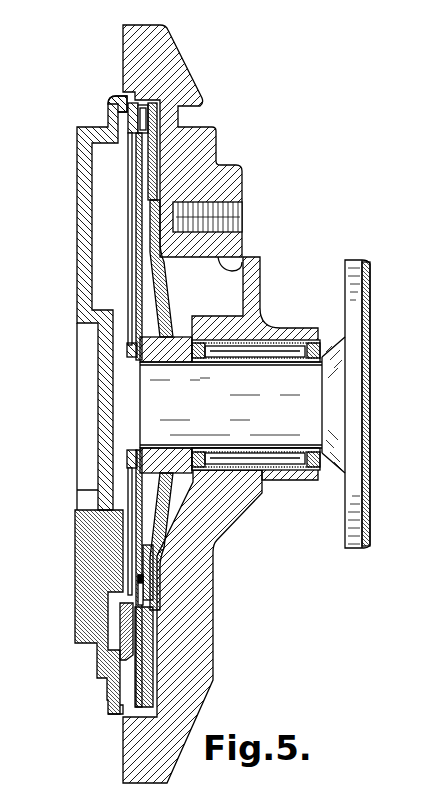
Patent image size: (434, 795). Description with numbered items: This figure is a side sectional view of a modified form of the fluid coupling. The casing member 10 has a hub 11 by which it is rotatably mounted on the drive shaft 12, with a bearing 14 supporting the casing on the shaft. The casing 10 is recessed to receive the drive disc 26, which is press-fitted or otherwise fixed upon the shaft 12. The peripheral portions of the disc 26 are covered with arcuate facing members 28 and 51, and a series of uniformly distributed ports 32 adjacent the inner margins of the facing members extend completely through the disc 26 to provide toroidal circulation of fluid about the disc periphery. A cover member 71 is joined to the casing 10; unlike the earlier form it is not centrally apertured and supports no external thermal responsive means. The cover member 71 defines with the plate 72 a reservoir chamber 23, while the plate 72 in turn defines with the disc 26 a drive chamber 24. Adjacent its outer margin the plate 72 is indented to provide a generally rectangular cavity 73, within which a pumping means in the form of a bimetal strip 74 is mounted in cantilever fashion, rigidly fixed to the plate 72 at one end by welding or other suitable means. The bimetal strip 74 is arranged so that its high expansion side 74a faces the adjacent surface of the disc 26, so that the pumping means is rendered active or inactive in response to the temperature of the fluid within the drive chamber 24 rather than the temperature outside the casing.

The casing member 10 is at (243, 255).
The hub 11 is at (277, 333).
The drive shaft 12 is at (236, 398).
The bearing 14 is at (252, 352).
The reservoir chamber 23 is at (113, 607).
The drive chamber 24 is at (120, 603).
The drive disc 26 is at (146, 567).
The arcuate facing member 28 is at (140, 181).
The ports 32 is at (140, 597).
The arcuate facing member 51 is at (156, 143).
The cover member 71 is at (97, 128).
The plate 72 is at (128, 280).
The cavity 73 is at (130, 133).
The bimetal strip 74 is at (114, 98).
The high expansion side 74a is at (140, 117).